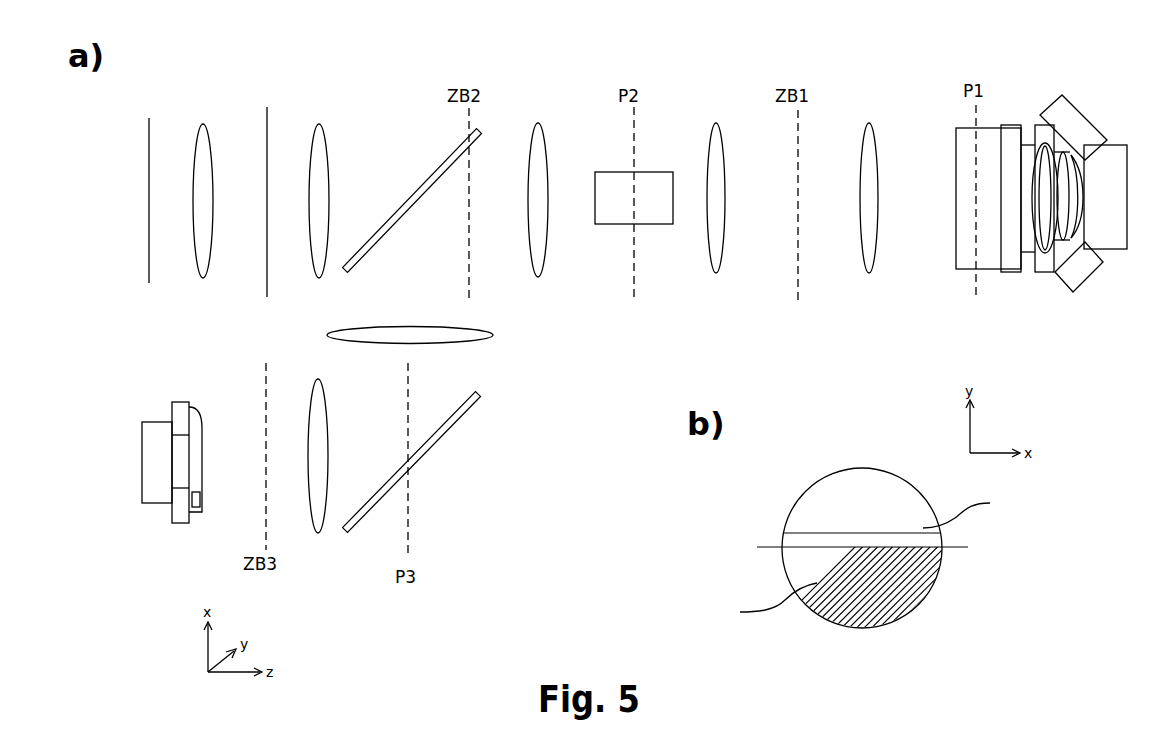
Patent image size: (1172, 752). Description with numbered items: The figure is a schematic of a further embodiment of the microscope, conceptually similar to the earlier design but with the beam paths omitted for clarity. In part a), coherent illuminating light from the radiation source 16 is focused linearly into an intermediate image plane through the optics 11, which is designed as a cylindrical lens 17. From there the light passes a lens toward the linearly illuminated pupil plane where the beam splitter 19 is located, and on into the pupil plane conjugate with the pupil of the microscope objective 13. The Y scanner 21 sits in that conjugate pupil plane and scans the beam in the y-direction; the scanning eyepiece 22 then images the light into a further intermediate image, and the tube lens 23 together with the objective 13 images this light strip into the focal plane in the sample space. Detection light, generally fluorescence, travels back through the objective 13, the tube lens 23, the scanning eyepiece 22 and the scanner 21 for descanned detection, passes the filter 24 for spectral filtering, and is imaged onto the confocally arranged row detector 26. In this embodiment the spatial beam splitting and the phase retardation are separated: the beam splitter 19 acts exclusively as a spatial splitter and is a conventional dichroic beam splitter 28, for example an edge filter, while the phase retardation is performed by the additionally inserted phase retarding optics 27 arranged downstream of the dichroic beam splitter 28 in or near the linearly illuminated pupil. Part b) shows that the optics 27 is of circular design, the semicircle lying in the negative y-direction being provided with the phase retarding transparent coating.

The optics 11 is at (193, 489).
The microscope objective 13 is at (1007, 145).
The radiation source 16 is at (157, 494).
The cylindrical lens 17 is at (197, 502).
The beam splitter 19 is at (412, 163).
The Y scanner 21 is at (612, 218).
The scanning eyepiece 22 is at (716, 272).
The tube lens 23 is at (869, 272).
The filter 24 is at (267, 127).
The row detector 26 is at (149, 272).
The phase retarding optics 27 is at (430, 442).
The dichroic beam splitter 28 is at (445, 157).